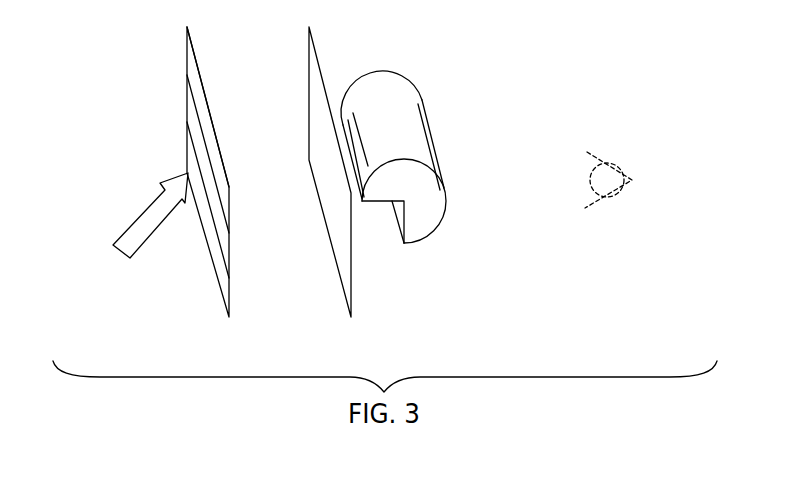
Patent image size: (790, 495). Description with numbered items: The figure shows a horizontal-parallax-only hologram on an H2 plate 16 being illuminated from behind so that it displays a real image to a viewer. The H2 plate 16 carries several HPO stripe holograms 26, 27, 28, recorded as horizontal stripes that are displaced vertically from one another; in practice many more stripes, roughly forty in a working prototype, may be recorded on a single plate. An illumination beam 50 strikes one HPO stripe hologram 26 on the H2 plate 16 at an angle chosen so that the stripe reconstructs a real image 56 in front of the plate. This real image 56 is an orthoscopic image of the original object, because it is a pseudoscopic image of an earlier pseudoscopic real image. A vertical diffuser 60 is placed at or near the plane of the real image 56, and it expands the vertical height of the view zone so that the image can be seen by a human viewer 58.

The H2 plate 16 is at (241, 166).
The HPO stripe hologram 26 is at (229, 278).
The HPO stripe hologram 27 is at (229, 235).
The HPO stripe hologram 28 is at (229, 190).
The illumination beam 50 is at (140, 227).
The real image 56 is at (398, 110).
The human viewer 58 is at (610, 162).
The vertical diffuser 60 is at (312, 99).